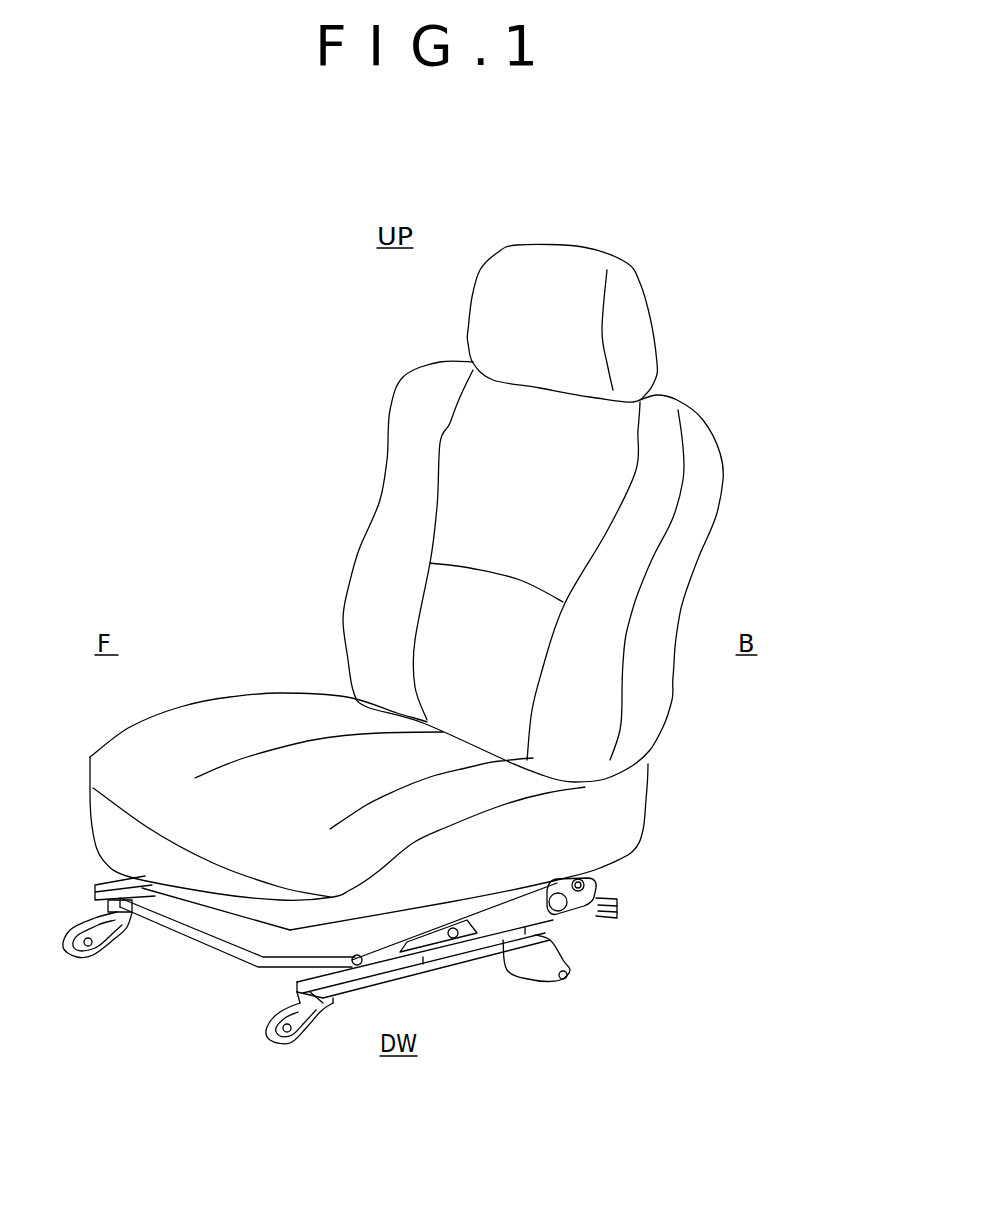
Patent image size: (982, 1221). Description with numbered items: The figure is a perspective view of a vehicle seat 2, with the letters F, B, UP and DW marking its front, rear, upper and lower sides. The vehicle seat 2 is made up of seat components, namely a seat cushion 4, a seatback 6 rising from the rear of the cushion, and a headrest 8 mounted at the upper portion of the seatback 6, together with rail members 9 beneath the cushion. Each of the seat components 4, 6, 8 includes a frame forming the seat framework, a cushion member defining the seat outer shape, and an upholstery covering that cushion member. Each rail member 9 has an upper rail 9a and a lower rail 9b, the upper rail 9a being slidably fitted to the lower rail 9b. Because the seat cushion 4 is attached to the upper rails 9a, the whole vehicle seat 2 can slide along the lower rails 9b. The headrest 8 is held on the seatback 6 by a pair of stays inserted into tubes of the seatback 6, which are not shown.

The vehicle seat 2 is at (678, 352).
The seat cushion 4 is at (262, 693).
The seatback 6 is at (370, 532).
The headrest 8 is at (468, 330).
The rail member 9 is at (695, 860).
The upper rail 9a is at (597, 888).
The lower rail 9b is at (617, 918).